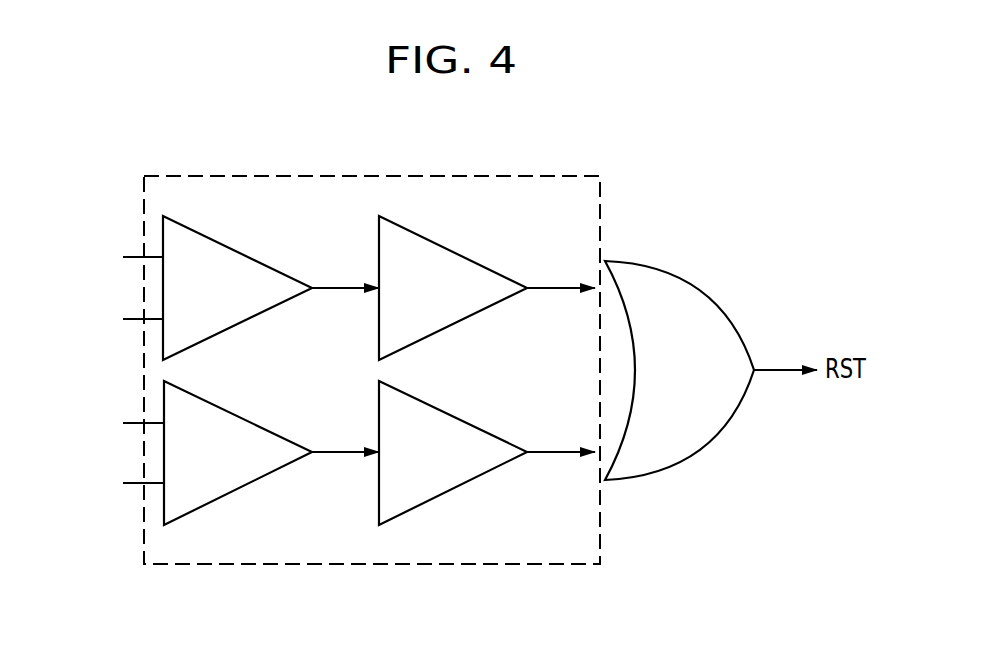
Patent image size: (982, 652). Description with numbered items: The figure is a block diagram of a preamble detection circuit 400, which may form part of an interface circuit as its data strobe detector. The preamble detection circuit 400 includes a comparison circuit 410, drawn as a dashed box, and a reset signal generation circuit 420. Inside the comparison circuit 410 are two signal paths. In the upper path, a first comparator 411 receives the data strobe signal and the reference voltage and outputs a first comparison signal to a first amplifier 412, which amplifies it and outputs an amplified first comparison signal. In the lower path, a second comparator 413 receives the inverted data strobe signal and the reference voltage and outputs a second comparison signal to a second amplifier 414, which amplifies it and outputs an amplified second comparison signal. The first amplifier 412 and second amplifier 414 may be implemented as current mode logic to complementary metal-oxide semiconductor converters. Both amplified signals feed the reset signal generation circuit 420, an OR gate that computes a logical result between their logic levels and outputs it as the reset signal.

The preamble detection circuit 400 is at (866, 118).
The comparison circuit 410 is at (527, 176).
The first comparator 411 is at (238, 324).
The first amplifier 412 is at (455, 323).
The second comparator 413 is at (242, 418).
The second amplifier 414 is at (455, 417).
The reset signal generation circuit 420 is at (700, 290).